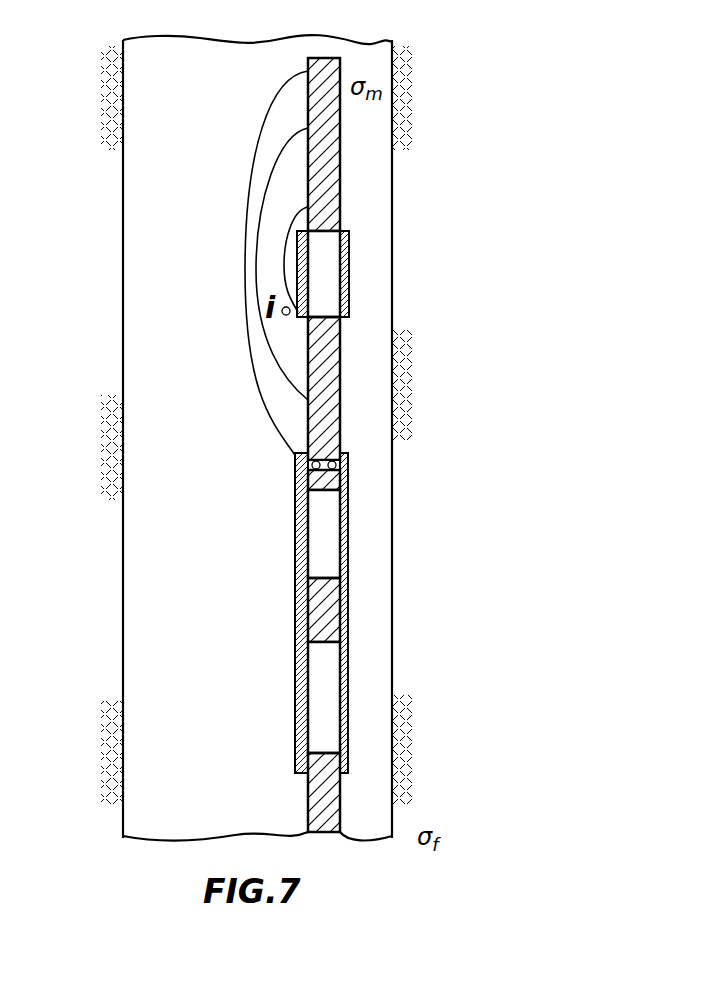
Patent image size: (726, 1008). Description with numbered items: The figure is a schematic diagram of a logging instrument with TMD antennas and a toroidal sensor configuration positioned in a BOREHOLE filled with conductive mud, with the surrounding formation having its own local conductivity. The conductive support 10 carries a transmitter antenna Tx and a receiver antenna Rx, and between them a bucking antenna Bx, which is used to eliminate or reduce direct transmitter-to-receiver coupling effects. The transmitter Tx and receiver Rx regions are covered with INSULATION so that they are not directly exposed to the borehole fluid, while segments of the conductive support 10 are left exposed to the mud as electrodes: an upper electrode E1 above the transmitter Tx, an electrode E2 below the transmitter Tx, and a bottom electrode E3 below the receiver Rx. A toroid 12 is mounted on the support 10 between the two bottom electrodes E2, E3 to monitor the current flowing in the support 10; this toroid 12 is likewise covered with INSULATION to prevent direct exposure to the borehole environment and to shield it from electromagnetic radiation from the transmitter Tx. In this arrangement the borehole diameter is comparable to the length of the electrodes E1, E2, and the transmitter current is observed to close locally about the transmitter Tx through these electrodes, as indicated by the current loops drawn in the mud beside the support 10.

The support 10 is at (459, 445).
The toroid 12 is at (349, 465).
The electrode E1 is at (340, 183).
The electrode E2 is at (340, 379).
The electrode E3 is at (340, 797).
The transmitter antenna Tx is at (349, 270).
The receiver antenna Rx is at (340, 677).
The bucking antenna Bx is at (340, 517).
The insulation INSULATION is at (349, 298).
The borehole BOREHOLE is at (392, 575).